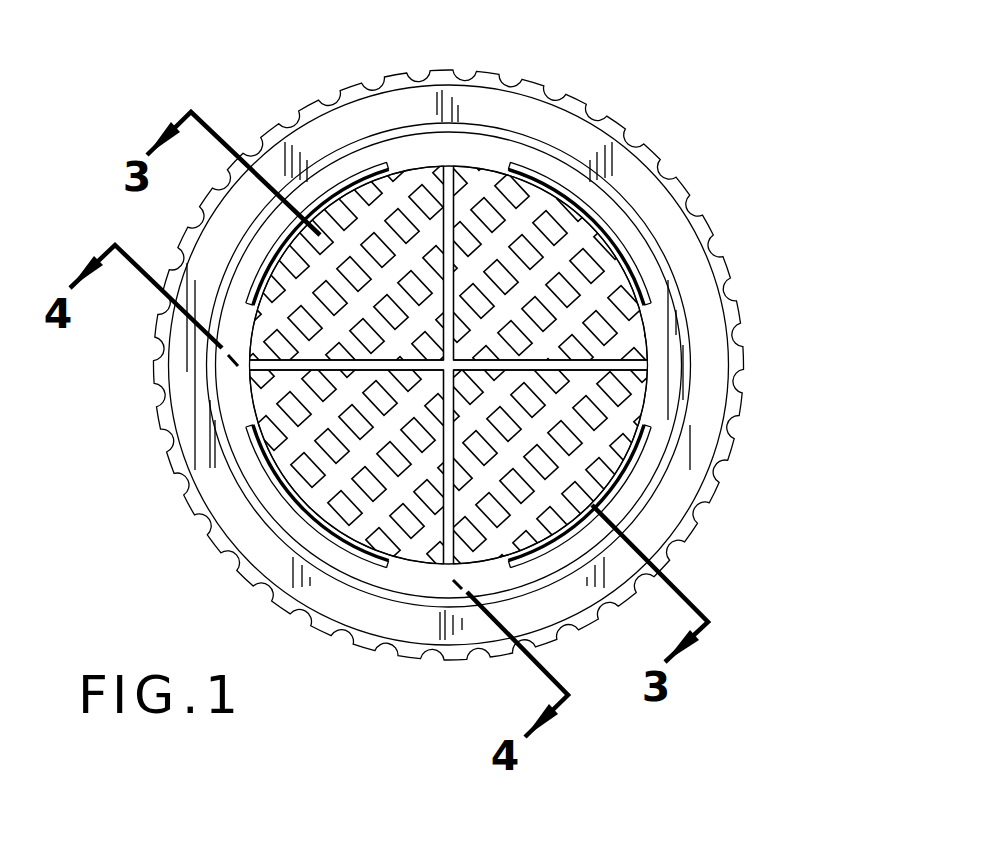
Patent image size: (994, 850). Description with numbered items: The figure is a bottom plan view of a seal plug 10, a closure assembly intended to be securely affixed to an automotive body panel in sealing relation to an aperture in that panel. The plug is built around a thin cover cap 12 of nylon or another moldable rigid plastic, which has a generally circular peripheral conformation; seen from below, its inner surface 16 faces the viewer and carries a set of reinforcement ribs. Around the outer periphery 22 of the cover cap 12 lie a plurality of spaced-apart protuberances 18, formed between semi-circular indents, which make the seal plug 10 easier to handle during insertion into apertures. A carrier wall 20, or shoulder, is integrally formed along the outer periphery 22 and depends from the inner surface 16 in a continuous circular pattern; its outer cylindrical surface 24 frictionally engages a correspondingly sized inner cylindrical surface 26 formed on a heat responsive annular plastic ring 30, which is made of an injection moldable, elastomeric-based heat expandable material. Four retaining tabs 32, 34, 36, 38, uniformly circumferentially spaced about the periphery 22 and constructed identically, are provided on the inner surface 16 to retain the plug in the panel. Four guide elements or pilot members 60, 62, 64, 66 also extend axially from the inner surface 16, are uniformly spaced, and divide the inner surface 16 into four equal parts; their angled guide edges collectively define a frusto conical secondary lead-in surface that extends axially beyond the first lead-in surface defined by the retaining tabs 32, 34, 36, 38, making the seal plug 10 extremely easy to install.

The seal plug 10 is at (448, 365).
The cover cap 12 is at (474, 183).
The inner surface 16 is at (428, 175).
The protuberances 18 is at (700, 207).
The carrier wall 20 is at (690, 283).
The outer periphery 22 is at (700, 335).
The outer cylindrical surface 24 is at (667, 268).
The inner cylindrical surface 26 is at (688, 436).
The heat responsive annular plastic ring 30 is at (520, 108).
The retaining tab 32 is at (280, 520).
The retaining tab 34 is at (330, 187).
The retaining tab 36 is at (577, 197).
The retaining tab 38 is at (577, 539).
The guide element 60 is at (282, 389).
The guide element 62 is at (402, 556).
The guide element 64 is at (648, 364).
The guide element 66 is at (457, 215).